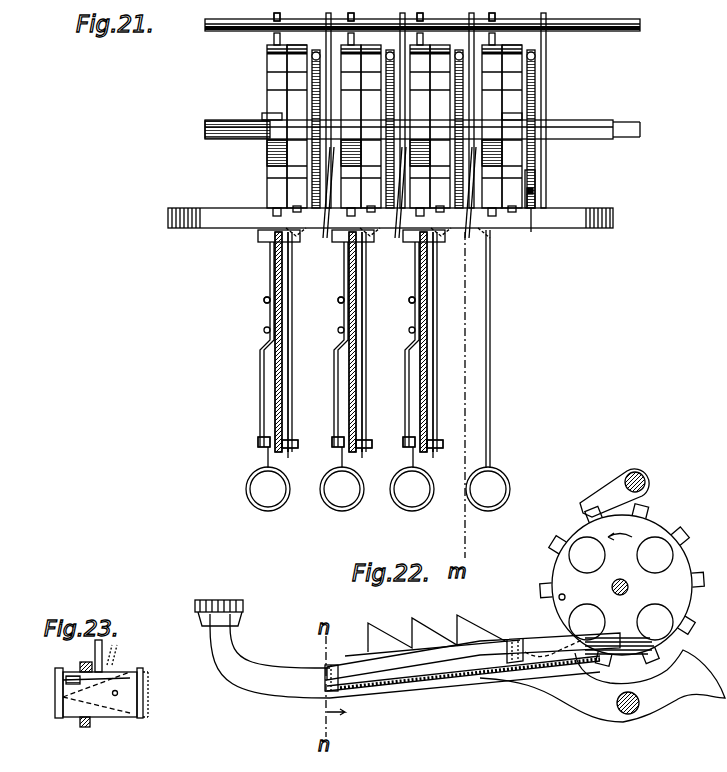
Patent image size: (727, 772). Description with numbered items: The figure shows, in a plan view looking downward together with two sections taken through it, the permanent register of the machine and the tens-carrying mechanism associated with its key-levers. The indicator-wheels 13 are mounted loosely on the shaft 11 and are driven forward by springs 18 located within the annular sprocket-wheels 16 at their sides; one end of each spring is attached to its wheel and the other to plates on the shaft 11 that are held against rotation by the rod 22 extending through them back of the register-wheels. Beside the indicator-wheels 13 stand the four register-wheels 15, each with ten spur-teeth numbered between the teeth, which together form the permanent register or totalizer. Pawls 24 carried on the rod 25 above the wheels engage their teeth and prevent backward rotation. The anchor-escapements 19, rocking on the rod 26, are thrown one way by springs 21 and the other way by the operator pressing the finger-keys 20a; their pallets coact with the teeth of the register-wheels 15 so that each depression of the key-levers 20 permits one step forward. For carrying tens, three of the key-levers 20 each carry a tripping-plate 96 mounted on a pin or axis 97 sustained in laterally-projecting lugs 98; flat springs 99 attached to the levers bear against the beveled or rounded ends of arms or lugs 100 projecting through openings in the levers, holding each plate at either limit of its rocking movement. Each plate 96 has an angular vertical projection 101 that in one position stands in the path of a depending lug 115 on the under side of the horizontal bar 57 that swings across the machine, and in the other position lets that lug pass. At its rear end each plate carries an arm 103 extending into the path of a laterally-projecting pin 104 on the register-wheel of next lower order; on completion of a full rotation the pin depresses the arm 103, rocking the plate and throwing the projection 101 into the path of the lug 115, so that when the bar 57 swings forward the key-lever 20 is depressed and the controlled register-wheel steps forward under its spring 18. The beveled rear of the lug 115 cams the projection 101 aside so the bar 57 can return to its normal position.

In FIG. 21, the rod 22 is at (207, 22).
In FIG. 21, the springs 21 is at (553, 52).
In FIG. 21, the anchor-escapements 19 is at (272, 40).
In FIG. 22, the anchor-escapements 19 is at (602, 686).
In FIG. 21, the indicator-wheels 13 is at (303, 44).
In FIG. 21, the register-wheels 15 is at (267, 80).
In FIG. 22, the register-wheels 15 is at (622, 585).
In FIG. 21, the pawls 24 is at (262, 116).
In FIG. 22, the pawls 24 is at (608, 491).
In FIG. 21, the rod 25 is at (207, 126).
In FIG. 22, the rod 25 is at (646, 482).
In FIG. 21, the cross bar 57 is at (238, 218).
In FIG. 21, the laterally-projecting pins 104 is at (535, 191).
In FIG. 22, the laterally-projecting pins 104 is at (559, 595).
In FIG. 21, the annular sprocket-wheels 16 is at (533, 200).
In FIG. 21, the springs 18 is at (530, 194).
In FIG. 21, the arms 103 is at (306, 231).
In FIG. 22, the arms 103 is at (545, 645).
In FIG. 21, the depending lug 115 is at (325, 240).
In FIG. 21, the laterally-projecting lugs 98 is at (296, 444).
In FIG. 21, the tripping-plate 96 is at (283, 284).
In FIG. 22, the tripping-plate 96 is at (440, 668).
In FIG. 21, the pin or axis 97 is at (283, 320).
In FIG. 22, the pin or axis 97 is at (478, 662).
In FIG. 23, the pin or axis 97 is at (116, 697).
In FIG. 21, the angular vertical projection 101 is at (283, 355).
In FIG. 22, the angular vertical projection 101 is at (457, 622).
In FIG. 23, the angular vertical projection 101 is at (92, 656).
In FIG. 21, the flat springs 99 is at (262, 390).
In FIG. 23, the flat springs 99 is at (63, 697).
In FIG. 21, the arms or lugs 100 is at (262, 446).
In FIG. 23, the arms or lugs 100 is at (73, 716).
In FIG. 21, the key-levers 20 is at (271, 458).
In FIG. 22, the key-levers 20 is at (316, 700).
In FIG. 23, the key-levers 20 is at (100, 718).
In FIG. 21, the finger-keys 20a is at (288, 504).
In FIG. 22, the finger-keys 20a is at (244, 622).
In FIG. 22, the shaft 11 is at (629, 588).
In FIG. 22, the rod 26 is at (637, 712).